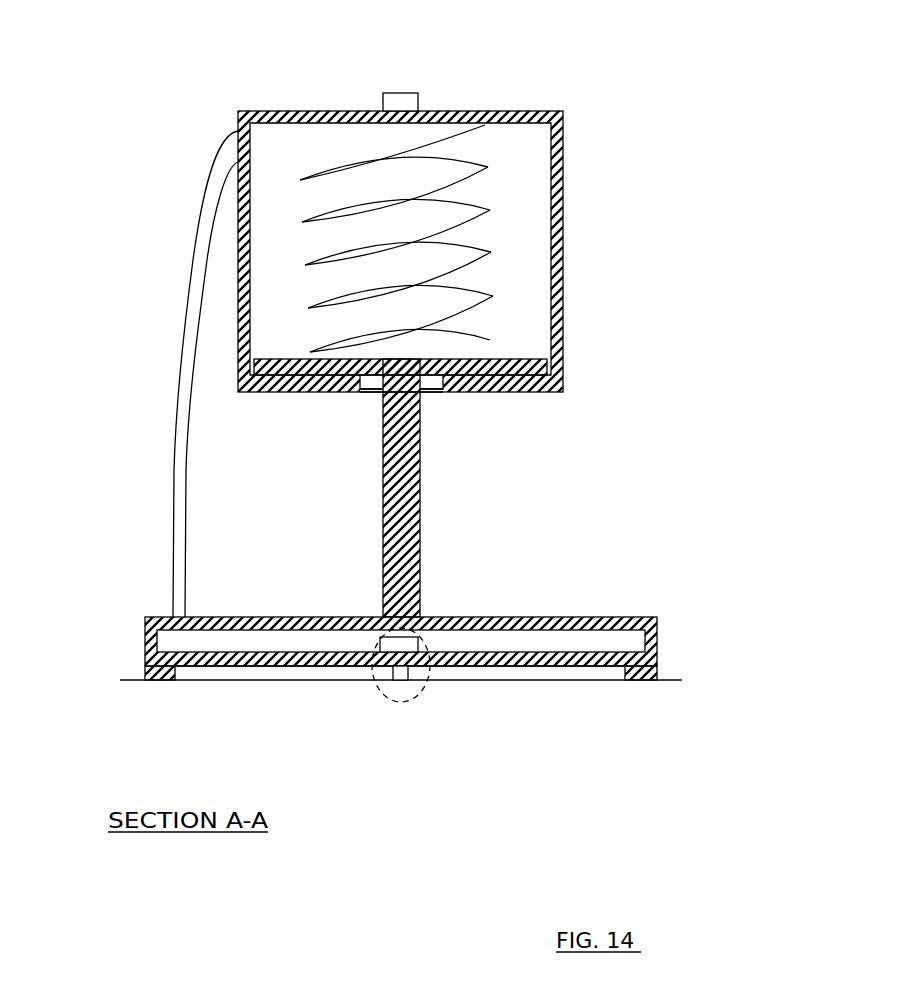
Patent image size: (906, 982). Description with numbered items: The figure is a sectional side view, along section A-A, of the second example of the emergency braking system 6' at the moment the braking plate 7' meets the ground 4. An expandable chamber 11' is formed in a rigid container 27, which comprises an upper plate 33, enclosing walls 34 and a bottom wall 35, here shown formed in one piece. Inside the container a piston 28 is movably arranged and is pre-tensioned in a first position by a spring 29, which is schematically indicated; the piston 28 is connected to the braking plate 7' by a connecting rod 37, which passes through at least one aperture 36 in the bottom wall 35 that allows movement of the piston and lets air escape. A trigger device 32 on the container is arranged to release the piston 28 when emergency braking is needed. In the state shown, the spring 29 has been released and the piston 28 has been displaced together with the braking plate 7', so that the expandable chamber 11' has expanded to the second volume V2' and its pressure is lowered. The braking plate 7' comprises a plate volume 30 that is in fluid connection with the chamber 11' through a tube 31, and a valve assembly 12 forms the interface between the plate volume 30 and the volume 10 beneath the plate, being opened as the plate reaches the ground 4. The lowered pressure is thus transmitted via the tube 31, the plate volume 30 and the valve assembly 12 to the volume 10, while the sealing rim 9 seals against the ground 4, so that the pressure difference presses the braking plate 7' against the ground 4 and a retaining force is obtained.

The emergency braking system 6' is at (384, 43).
The trigger device 32 is at (400, 102).
The upper plate 33 is at (463, 111).
The tube 31 is at (203, 221).
The expandable chamber 11' is at (282, 235).
The spring 29 is at (488, 167).
The second volume V2' is at (631, 264).
The piston 28 is at (490, 362).
The rigid container 27 is at (577, 317).
The enclosing walls 34 is at (557, 343).
The bottom wall 35 is at (507, 391).
The aperture 36 is at (434, 394).
The connecting rod 37 is at (420, 460).
The braking plate 7' is at (364, 641).
The plate volume 30 is at (180, 642).
The valve assembly 12 is at (372, 690).
The sealing rim 9 is at (657, 672).
The volume 10 is at (498, 672).
The ground 4 is at (457, 680).